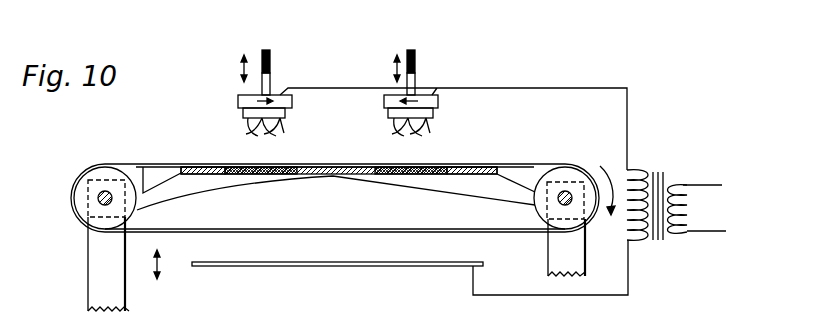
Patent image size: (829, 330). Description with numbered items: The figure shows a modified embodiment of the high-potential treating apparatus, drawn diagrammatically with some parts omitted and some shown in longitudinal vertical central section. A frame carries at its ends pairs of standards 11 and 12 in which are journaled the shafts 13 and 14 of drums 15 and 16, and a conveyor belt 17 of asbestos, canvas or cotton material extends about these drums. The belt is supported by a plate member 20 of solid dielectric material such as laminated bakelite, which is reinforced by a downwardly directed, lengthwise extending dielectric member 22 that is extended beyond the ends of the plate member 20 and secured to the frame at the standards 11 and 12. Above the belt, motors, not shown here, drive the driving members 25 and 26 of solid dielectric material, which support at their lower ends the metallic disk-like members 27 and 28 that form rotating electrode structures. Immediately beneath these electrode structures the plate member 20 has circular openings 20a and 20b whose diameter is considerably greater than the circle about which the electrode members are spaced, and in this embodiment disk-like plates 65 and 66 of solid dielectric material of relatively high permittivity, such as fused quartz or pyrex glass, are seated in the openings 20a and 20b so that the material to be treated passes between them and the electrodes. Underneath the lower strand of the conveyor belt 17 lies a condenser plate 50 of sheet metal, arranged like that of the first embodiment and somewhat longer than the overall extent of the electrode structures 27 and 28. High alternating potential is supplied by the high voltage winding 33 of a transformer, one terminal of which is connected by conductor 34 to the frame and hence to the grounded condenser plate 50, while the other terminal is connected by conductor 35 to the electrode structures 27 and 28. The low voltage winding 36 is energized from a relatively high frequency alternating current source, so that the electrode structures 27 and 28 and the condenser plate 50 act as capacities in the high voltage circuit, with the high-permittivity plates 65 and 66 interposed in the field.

The standards 11 is at (92, 281).
The standards 12 is at (577, 270).
The shaft 13 is at (100, 205).
The shaft 14 is at (560, 207).
The drum 15 is at (86, 182).
The drum 16 is at (576, 185).
The conveyor belt 17 is at (158, 164).
The plate member 20 is at (183, 176).
The circular opening 20a is at (218, 176).
The circular opening 20b is at (456, 176).
The reinforcing member 22 is at (143, 166).
The driving member 25 is at (271, 64).
The driving member 26 is at (416, 66).
The metallic disk-like member 27 is at (286, 113).
The metallic disk-like member 28 is at (434, 113).
The high voltage winding 33 is at (628, 170).
The conductor 34 is at (568, 296).
The conductor 35 is at (540, 88).
The low voltage winding 36 is at (684, 186).
The condenser plate 50 is at (297, 266).
The disk-like plate 65 is at (265, 176).
The disk-like plate 66 is at (412, 176).